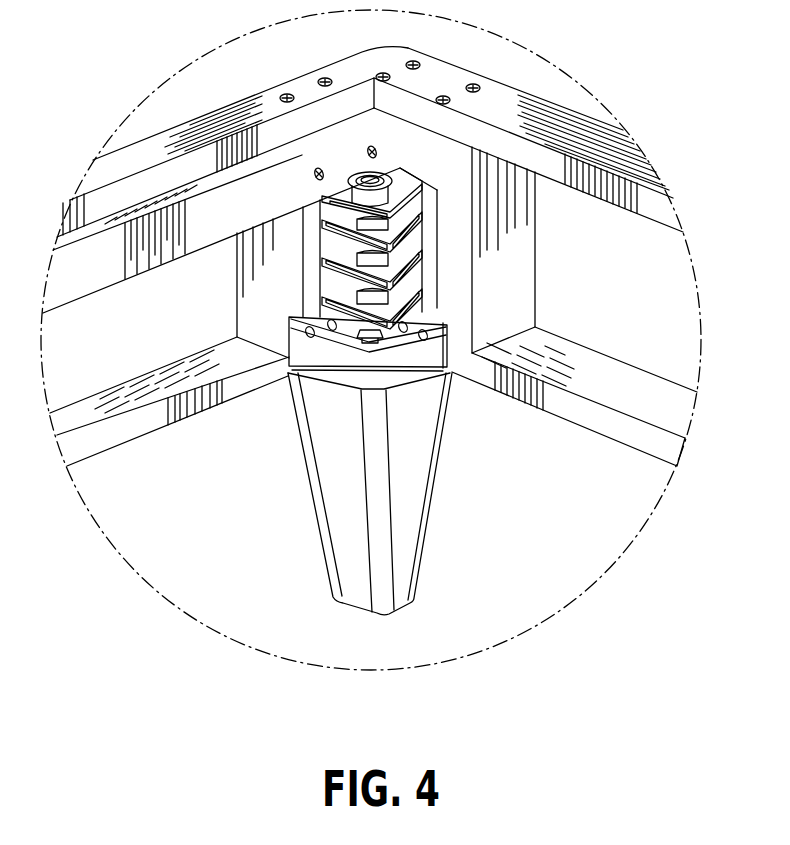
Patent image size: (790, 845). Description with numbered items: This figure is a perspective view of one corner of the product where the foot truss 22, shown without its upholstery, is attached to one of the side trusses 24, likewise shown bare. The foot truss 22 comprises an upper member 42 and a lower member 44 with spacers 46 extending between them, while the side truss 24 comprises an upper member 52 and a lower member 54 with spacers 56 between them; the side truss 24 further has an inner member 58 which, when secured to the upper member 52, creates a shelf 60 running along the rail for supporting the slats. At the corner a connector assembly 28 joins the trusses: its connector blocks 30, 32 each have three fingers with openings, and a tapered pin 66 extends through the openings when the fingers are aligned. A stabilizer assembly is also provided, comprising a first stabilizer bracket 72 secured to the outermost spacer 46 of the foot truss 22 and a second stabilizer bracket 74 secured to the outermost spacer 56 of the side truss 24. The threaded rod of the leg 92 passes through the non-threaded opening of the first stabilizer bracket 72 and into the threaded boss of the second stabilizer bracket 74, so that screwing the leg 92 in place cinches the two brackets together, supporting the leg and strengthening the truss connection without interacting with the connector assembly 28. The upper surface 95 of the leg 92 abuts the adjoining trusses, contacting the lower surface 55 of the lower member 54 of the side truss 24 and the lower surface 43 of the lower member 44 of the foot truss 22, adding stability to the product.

The foot truss 22 is at (533, 86).
The side truss 24 is at (151, 130).
The connector assembly 28 is at (344, 156).
The connector block 30 is at (294, 259).
The connector block 32 is at (446, 220).
The upper member 42 is at (453, 78).
The lower surface 43 is at (597, 434).
The lower member 44 is at (653, 387).
The spacer 46 is at (530, 298).
The upper member 52 is at (263, 100).
The lower member 54 is at (94, 408).
The lower surface 55 is at (162, 427).
The spacer 56 is at (246, 322).
The inner member 58 is at (250, 217).
The shelf 60 is at (234, 170).
The tapered pin 66 is at (378, 176).
The first stabilizer bracket 72 is at (446, 338).
The second stabilizer bracket 74 is at (289, 340).
The leg 92 is at (322, 544).
The upper surface 95 is at (371, 380).